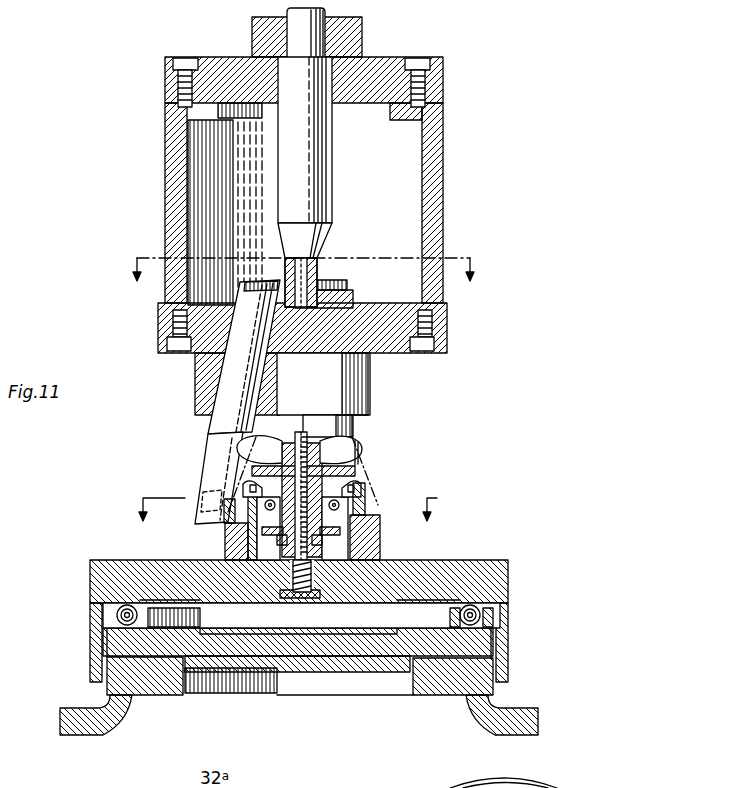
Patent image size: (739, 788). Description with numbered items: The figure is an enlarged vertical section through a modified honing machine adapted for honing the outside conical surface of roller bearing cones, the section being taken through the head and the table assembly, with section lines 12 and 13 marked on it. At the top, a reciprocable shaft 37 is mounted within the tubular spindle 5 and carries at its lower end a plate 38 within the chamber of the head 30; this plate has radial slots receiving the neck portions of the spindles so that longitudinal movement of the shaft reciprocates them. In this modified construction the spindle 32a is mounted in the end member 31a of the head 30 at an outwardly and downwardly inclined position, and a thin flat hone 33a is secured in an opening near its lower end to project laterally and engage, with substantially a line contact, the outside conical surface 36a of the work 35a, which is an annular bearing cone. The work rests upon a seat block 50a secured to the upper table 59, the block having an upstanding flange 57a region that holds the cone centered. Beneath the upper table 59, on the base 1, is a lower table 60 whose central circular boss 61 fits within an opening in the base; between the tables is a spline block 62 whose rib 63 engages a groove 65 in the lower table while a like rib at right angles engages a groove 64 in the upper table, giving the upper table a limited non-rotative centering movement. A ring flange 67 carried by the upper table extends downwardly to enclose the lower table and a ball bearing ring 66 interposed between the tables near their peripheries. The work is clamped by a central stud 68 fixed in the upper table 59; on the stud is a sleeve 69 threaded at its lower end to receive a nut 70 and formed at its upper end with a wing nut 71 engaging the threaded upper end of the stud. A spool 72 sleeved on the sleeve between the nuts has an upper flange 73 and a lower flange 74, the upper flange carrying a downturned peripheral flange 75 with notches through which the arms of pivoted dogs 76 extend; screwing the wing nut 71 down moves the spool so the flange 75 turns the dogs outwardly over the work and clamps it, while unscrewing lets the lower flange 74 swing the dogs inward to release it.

The base 1 is at (106, 728).
The tubular spindle 5 is at (357, 40).
The section line 12 is at (286, 521).
The section line 13 is at (302, 283).
The head 30 is at (443, 165).
The end member 31a is at (400, 355).
The spindle 32a is at (223, 378).
The hone 33a is at (207, 507).
The work 35a is at (363, 497).
The conical surface 36a is at (368, 508).
The reciprocable shaft 37 is at (305, 157).
The plate 38 is at (353, 293).
The seat block 50a is at (227, 528).
The support block 57a is at (367, 503).
The upper table 59 is at (92, 565).
The lower table 60 is at (242, 665).
The central circular boss 61 is at (340, 673).
The spindle seat 62 is at (327, 628).
The rib 63 is at (273, 636).
The groove 64 is at (330, 592).
The groove 65 is at (405, 665).
The ball bearing ring 66 is at (500, 617).
The ring flange 67 is at (89, 670).
The central stud 68 is at (298, 430).
The sleeve 69 is at (283, 548).
The nut 70 is at (321, 548).
The wing nut 71 is at (262, 447).
The spool 72 is at (297, 493).
The upper flange 73 is at (253, 457).
The lower flange 74 is at (262, 540).
The downturned peripheral flange 75 is at (263, 472).
The dog 76 is at (253, 497).